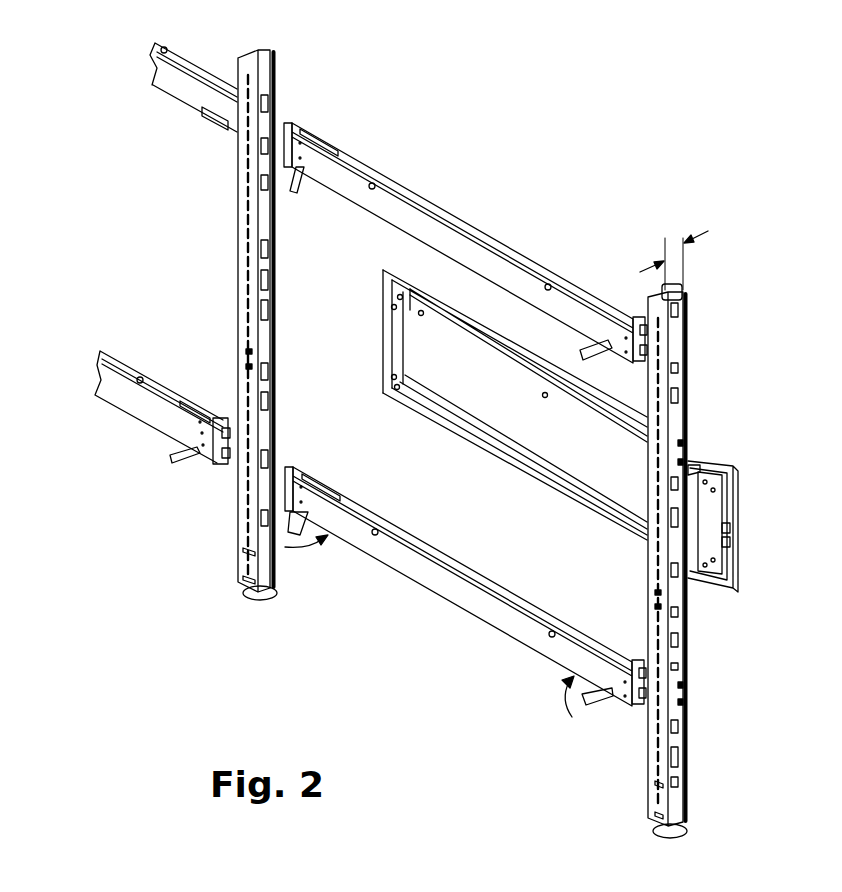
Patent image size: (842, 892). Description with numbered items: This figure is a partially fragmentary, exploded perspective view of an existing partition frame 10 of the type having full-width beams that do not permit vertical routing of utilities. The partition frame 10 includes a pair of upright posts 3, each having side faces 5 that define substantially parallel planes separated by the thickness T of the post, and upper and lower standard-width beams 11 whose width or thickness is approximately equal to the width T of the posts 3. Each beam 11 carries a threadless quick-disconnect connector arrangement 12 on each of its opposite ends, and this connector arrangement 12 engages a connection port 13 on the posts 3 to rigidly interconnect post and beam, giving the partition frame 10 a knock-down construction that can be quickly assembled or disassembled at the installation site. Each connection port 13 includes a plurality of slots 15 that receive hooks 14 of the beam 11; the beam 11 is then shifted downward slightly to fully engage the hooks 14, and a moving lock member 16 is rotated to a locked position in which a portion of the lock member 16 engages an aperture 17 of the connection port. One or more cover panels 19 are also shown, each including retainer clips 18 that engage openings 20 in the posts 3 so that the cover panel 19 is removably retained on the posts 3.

The partition frame 10 is at (454, 438).
The upright post 3 is at (237, 286).
The side face 5 is at (665, 413).
The beam 11 is at (470, 217).
The quick-disconnect connector arrangement 12 is at (288, 140).
The connection port 13 is at (273, 146).
The hook 14 is at (640, 700).
The slot 15 is at (680, 462).
The lock member 16 is at (594, 704).
The aperture 17 is at (673, 735).
The retainer clip 18 is at (382, 338).
The cover panel 19 is at (727, 463).
The opening 20 is at (253, 352).